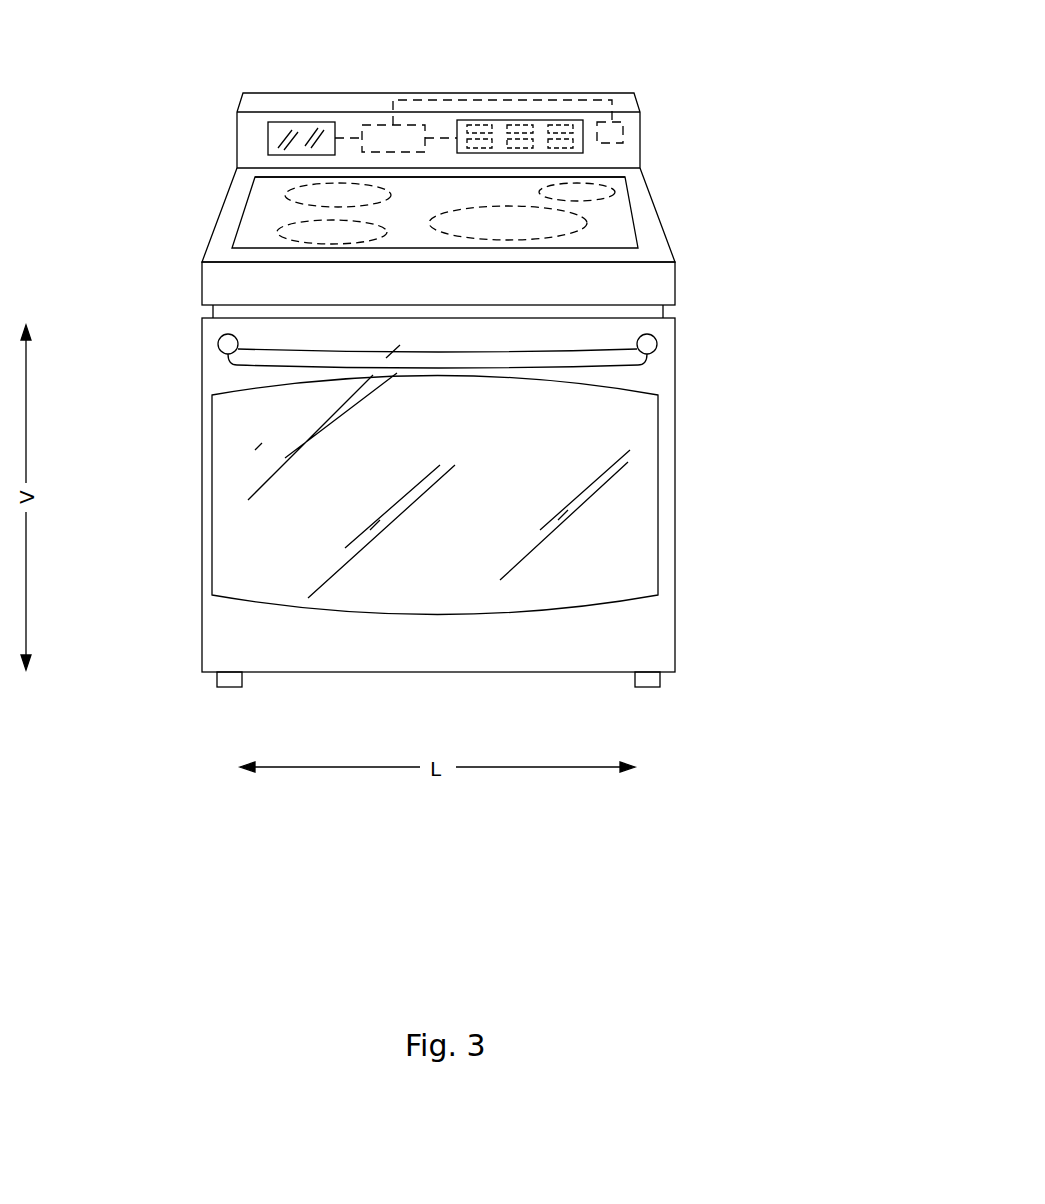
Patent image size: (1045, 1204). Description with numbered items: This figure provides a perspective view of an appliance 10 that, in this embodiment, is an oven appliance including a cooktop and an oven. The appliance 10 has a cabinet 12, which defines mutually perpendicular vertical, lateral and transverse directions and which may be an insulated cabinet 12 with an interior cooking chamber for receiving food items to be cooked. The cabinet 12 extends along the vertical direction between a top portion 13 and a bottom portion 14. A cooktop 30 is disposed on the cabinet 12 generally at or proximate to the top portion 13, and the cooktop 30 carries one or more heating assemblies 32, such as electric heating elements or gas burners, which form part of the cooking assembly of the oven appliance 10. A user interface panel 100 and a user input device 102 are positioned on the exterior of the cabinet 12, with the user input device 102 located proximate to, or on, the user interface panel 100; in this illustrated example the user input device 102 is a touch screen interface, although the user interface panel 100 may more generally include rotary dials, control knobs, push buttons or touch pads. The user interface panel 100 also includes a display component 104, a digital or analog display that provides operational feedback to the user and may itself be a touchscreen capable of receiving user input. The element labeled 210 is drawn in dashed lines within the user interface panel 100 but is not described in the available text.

The appliance 10 is at (818, 122).
The cabinet 12 is at (213, 310).
The top portion 13 is at (690, 263).
The bottom portion 14 is at (692, 673).
The cooktop 30 is at (243, 182).
The heating assemblies 32 is at (275, 227).
The user interface panel 100 is at (622, 88).
The user input device 102 is at (520, 120).
The display component 104 is at (302, 122).
The controller 210 is at (372, 125).